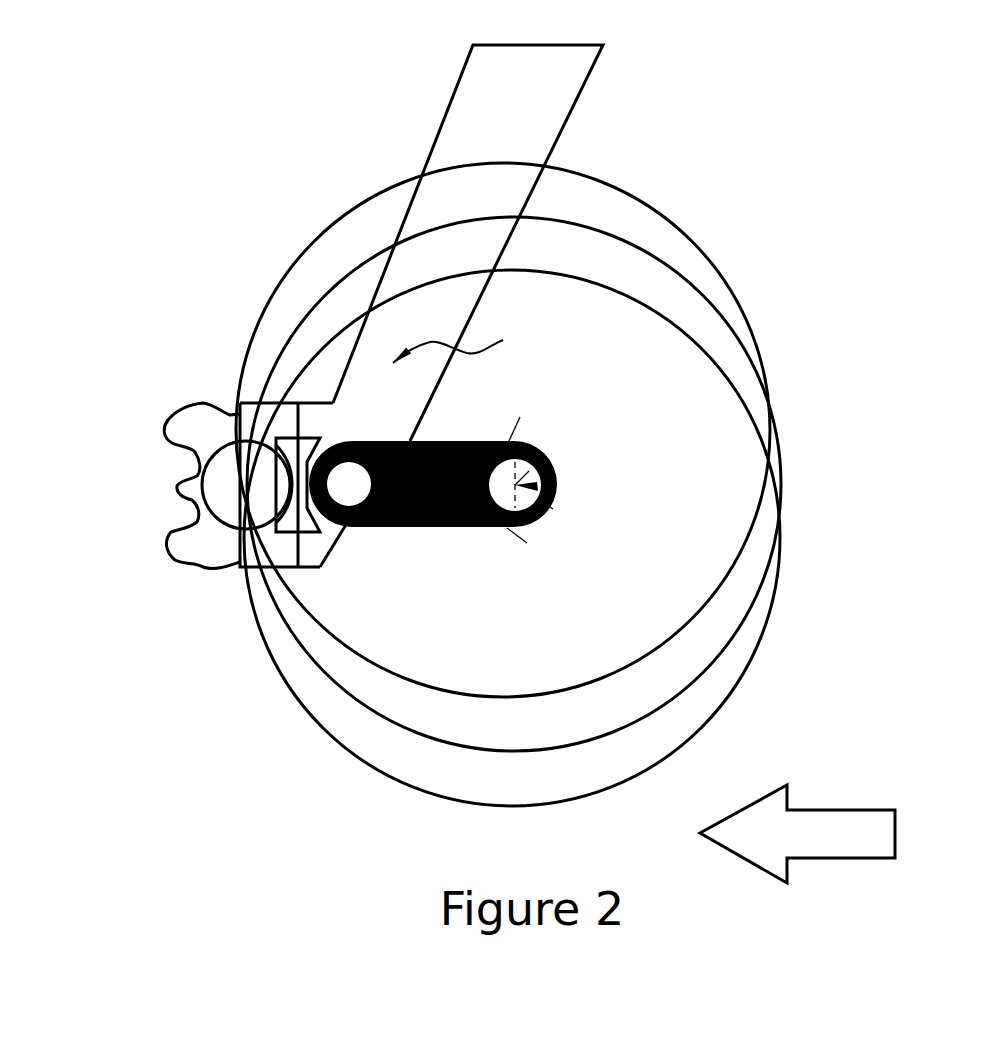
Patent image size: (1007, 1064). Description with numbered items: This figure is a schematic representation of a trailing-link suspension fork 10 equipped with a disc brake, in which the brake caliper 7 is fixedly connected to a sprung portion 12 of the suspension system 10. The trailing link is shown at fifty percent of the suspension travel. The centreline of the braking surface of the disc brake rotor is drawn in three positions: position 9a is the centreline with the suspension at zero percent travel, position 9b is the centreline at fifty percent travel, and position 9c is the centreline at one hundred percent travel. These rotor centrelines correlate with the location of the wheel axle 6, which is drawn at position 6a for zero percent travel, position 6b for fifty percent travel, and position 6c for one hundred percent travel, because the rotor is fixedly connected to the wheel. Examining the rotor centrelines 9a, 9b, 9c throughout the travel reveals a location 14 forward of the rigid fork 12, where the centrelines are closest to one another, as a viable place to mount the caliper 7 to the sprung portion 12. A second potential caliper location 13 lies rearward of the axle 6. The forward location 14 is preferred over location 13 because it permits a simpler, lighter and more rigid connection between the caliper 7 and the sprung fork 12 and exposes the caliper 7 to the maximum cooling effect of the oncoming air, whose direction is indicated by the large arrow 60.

The wheel axle 6 is at (548, 458).
The axle position at zero percent travel 6a is at (527, 543).
The axle position at fifty percent travel 6b is at (550, 507).
The axle position at one hundred percent travel 6c is at (520, 417).
The brake caliper 7 is at (210, 532).
The rotor braking surface centreline at zero percent travel 9a is at (657, 310).
The rotor braking surface centreline at fifty percent travel 9b is at (658, 250).
The rotor braking surface centreline at one hundred percent travel 9c is at (663, 208).
The trailing-link suspension fork 10 is at (480, 107).
The sprung portion 12 is at (467, 335).
The rearward caliper location 13 is at (773, 480).
The forward caliper location 14 is at (245, 485).
The direction of travel arrow 60 is at (755, 835).